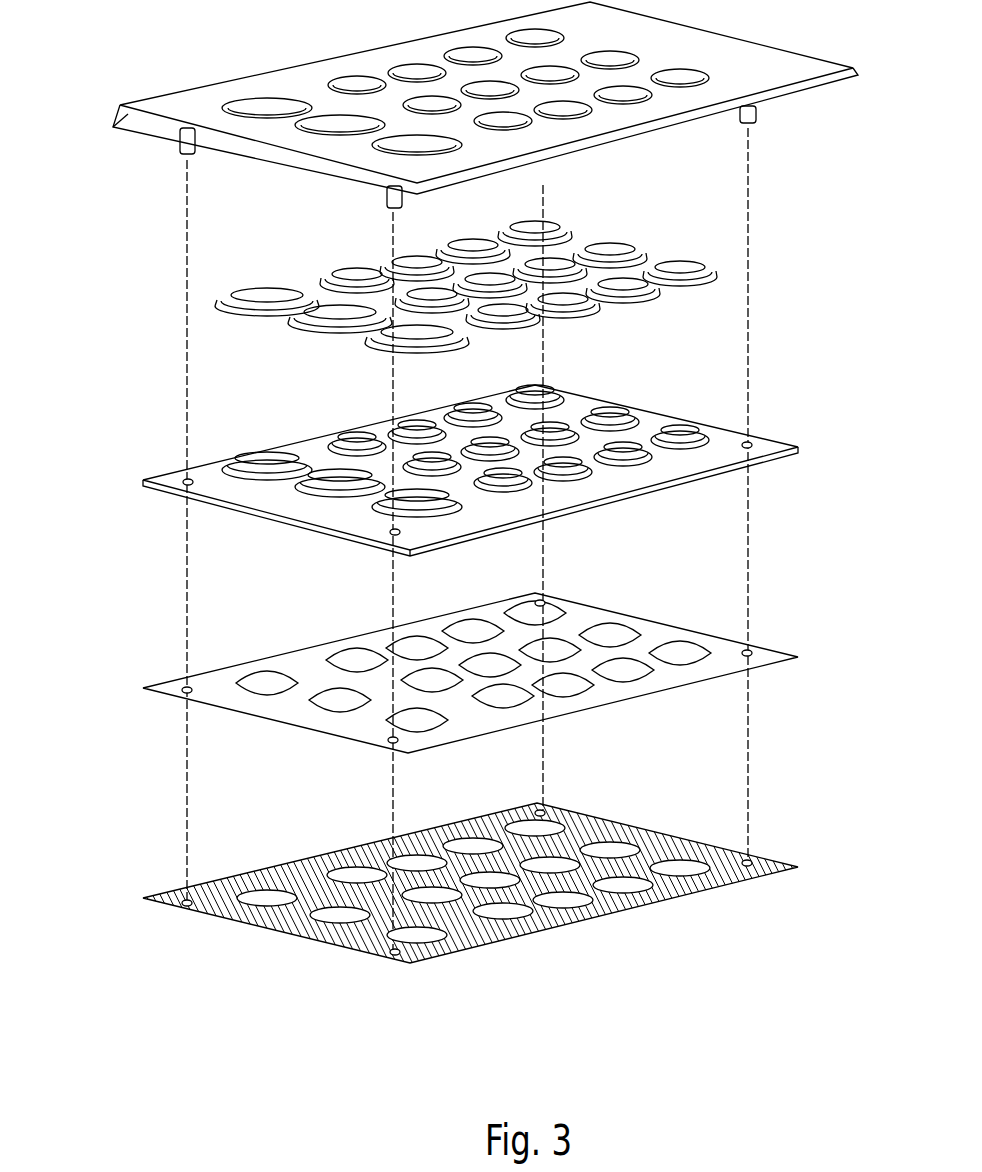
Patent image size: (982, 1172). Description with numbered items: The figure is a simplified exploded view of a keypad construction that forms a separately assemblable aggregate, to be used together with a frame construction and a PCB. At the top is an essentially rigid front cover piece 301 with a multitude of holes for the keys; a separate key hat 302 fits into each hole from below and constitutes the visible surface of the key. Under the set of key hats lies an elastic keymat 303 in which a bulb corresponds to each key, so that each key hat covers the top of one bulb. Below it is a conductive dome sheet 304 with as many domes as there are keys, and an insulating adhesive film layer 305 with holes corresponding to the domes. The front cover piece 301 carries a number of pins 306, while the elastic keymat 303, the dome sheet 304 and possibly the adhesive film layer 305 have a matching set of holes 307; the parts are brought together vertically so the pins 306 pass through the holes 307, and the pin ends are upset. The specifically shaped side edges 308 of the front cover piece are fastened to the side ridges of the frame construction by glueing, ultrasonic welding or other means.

The front cover piece 301 is at (168, 105).
The key hat 302 is at (243, 300).
The elastic keymat 303 is at (170, 477).
The conductive dome sheet 304 is at (162, 683).
The insulating adhesive film layer 305 is at (170, 887).
The pins 306 is at (180, 148).
The holes 307 is at (180, 488).
The side edges 308 is at (607, 150).